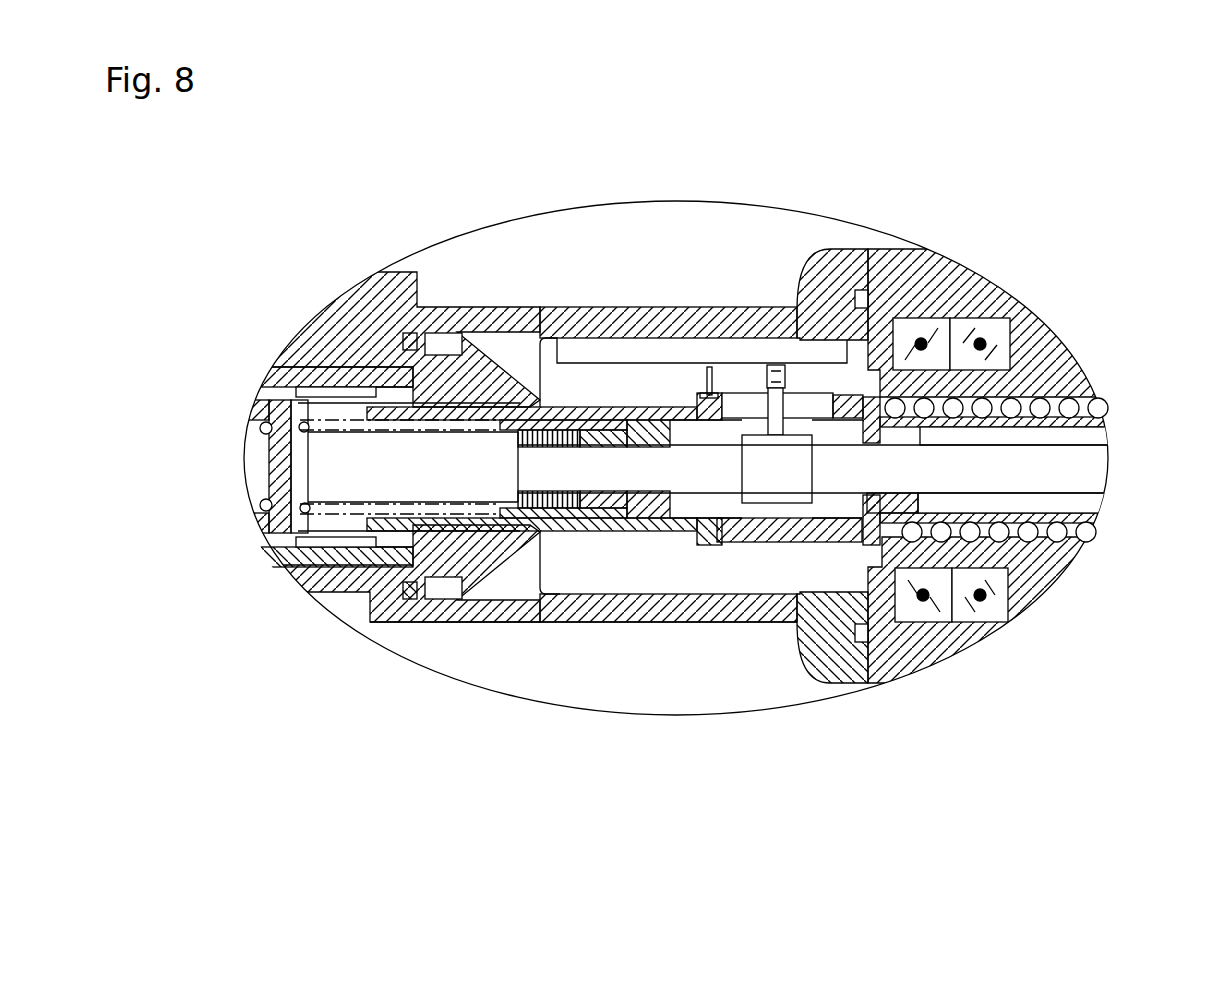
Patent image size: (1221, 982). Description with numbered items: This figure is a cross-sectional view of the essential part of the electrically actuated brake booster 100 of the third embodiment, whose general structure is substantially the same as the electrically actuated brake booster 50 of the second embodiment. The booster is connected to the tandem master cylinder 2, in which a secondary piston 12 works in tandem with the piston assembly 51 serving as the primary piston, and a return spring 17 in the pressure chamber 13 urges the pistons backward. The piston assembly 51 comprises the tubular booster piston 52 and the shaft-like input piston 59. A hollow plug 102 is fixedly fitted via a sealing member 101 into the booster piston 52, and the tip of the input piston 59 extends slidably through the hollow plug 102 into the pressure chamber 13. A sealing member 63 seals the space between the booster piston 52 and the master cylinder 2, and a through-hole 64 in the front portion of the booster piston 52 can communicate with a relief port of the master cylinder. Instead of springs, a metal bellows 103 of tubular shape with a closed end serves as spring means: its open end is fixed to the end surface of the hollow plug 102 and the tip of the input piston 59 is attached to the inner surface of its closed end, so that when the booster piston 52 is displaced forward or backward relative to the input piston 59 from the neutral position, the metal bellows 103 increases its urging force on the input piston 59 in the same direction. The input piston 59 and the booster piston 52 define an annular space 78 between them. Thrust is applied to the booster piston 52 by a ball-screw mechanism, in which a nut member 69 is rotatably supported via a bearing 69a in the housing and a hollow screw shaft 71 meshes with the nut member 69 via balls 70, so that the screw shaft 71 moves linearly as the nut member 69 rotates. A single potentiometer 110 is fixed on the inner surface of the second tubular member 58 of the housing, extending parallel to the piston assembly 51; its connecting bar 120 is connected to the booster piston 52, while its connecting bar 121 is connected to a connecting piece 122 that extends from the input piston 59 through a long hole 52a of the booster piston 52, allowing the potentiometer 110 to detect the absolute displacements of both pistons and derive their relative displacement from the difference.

The tandem master cylinder 2 is at (300, 335).
The secondary piston 12 is at (270, 522).
The pressure chamber 13 is at (319, 451).
The return spring 17 is at (352, 547).
The electrically actuated brake booster 50 is at (777, 622).
The piston assembly 51 is at (568, 400).
The booster piston 52 is at (747, 535).
The long hole 52a is at (822, 400).
The second tubular member 58 is at (723, 610).
The input piston 59 is at (1080, 472).
The sealing member 63 is at (522, 398).
The through-hole 64 is at (356, 367).
The nut member 69 is at (1043, 385).
The bearing 69a is at (940, 610).
The balls 70 is at (1056, 535).
The screw shaft 71 is at (1098, 407).
The annular space 78 is at (860, 625).
The electrically actuated brake booster 100 is at (990, 258).
The sealing member 101 is at (610, 523).
The hollow plug 102 is at (650, 523).
The metal bellows 103 is at (555, 523).
The potentiometer 110 is at (617, 332).
The connecting bar 120 is at (704, 372).
The connecting bar 121 is at (762, 363).
The connecting piece 122 is at (790, 405).